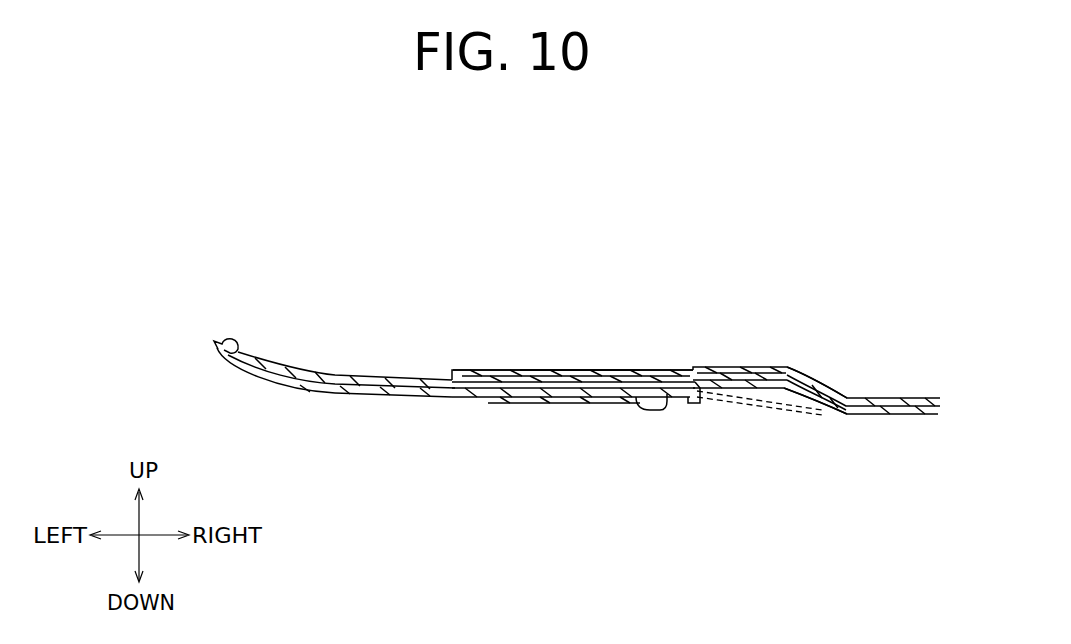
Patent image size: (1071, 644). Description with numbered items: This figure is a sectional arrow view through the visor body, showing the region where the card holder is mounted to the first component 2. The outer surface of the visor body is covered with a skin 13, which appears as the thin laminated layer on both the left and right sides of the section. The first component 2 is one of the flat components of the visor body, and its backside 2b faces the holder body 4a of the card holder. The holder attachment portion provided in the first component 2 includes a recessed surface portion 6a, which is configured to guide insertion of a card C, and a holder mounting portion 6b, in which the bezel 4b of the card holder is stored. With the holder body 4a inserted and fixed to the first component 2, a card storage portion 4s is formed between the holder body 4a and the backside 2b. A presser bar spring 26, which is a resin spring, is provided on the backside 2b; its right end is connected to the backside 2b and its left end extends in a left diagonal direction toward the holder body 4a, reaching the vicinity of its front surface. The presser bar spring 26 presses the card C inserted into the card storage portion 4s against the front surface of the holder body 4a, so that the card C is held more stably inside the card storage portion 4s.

The skin 13 is at (338, 398).
The first component 2 is at (490, 400).
The backside of the first component 2b is at (553, 370).
The presser bar spring 26 is at (576, 405).
The holder body 4a is at (578, 366).
The card storage portion 4s is at (660, 369).
The bezel 4b is at (671, 420).
The recessed surface portion 6a is at (800, 372).
The holder mounting portion 6b is at (745, 366).
The card C is at (770, 410).